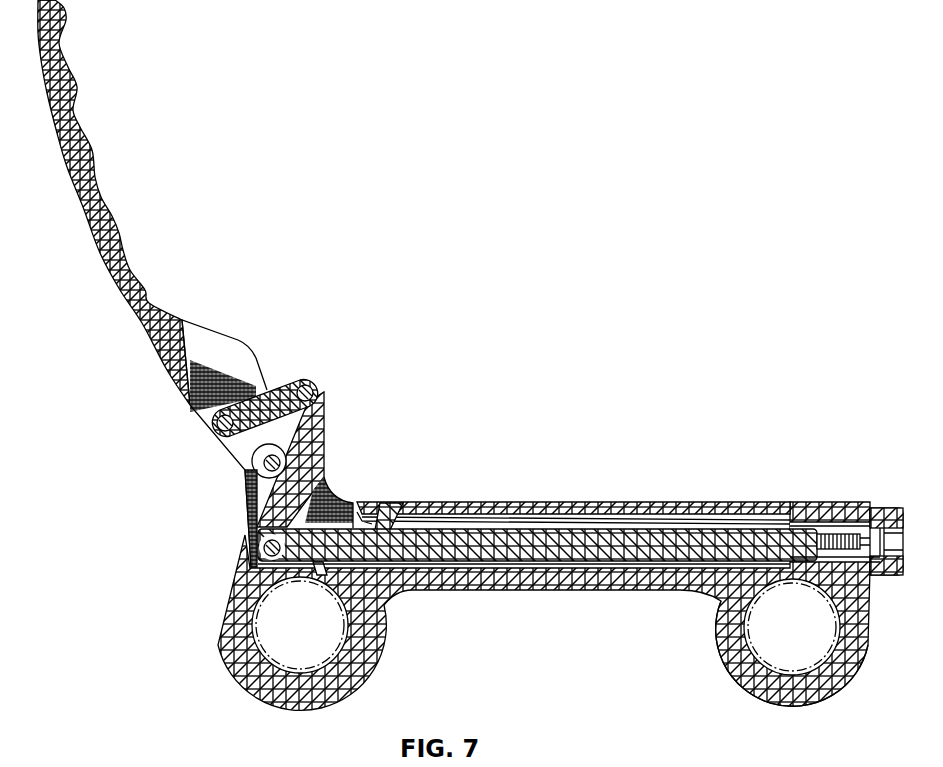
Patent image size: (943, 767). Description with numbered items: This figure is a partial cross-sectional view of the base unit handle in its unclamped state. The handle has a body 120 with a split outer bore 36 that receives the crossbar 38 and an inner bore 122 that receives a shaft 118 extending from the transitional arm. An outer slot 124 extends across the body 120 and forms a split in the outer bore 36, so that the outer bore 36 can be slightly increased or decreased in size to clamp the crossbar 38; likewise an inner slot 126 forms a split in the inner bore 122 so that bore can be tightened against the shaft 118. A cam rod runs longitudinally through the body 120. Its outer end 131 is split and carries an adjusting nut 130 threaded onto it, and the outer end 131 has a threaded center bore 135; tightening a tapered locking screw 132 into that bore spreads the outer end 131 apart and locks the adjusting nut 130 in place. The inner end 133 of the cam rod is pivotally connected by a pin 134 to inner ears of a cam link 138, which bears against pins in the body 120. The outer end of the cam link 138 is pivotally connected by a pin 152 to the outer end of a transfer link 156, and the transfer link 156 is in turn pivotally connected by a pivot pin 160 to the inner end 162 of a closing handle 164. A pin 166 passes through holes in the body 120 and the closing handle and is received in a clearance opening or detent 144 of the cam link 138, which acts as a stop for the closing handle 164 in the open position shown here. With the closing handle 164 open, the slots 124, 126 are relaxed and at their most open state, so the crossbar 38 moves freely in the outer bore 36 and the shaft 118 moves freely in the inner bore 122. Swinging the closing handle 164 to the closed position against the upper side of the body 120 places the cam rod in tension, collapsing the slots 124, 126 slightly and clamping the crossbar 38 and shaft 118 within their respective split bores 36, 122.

The closing handle 164 is at (125, 233).
The inner end of closing handle 162 is at (198, 330).
The pin 166 is at (250, 480).
The cam link 138 is at (326, 448).
The clearance opening or detent 144 is at (261, 464).
The inner end of cam rod 133 is at (256, 533).
The transfer link 156 is at (270, 388).
The pivot pin 160 is at (212, 430).
The pin 152 is at (322, 390).
The body 120 is at (523, 590).
The shaft 118 is at (258, 622).
The inner bore 122 is at (280, 665).
The split outer bore 36 is at (760, 657).
The crossbar 38 is at (745, 648).
The outer slot 124 is at (795, 505).
The inner slot 126 is at (407, 505).
The outer end of cam rod 131 is at (823, 557).
The pin 134 is at (262, 548).
The threaded center bore 135 is at (833, 530).
The adjusting nut 130 is at (888, 508).
The tapered locking screw 132 is at (878, 567).